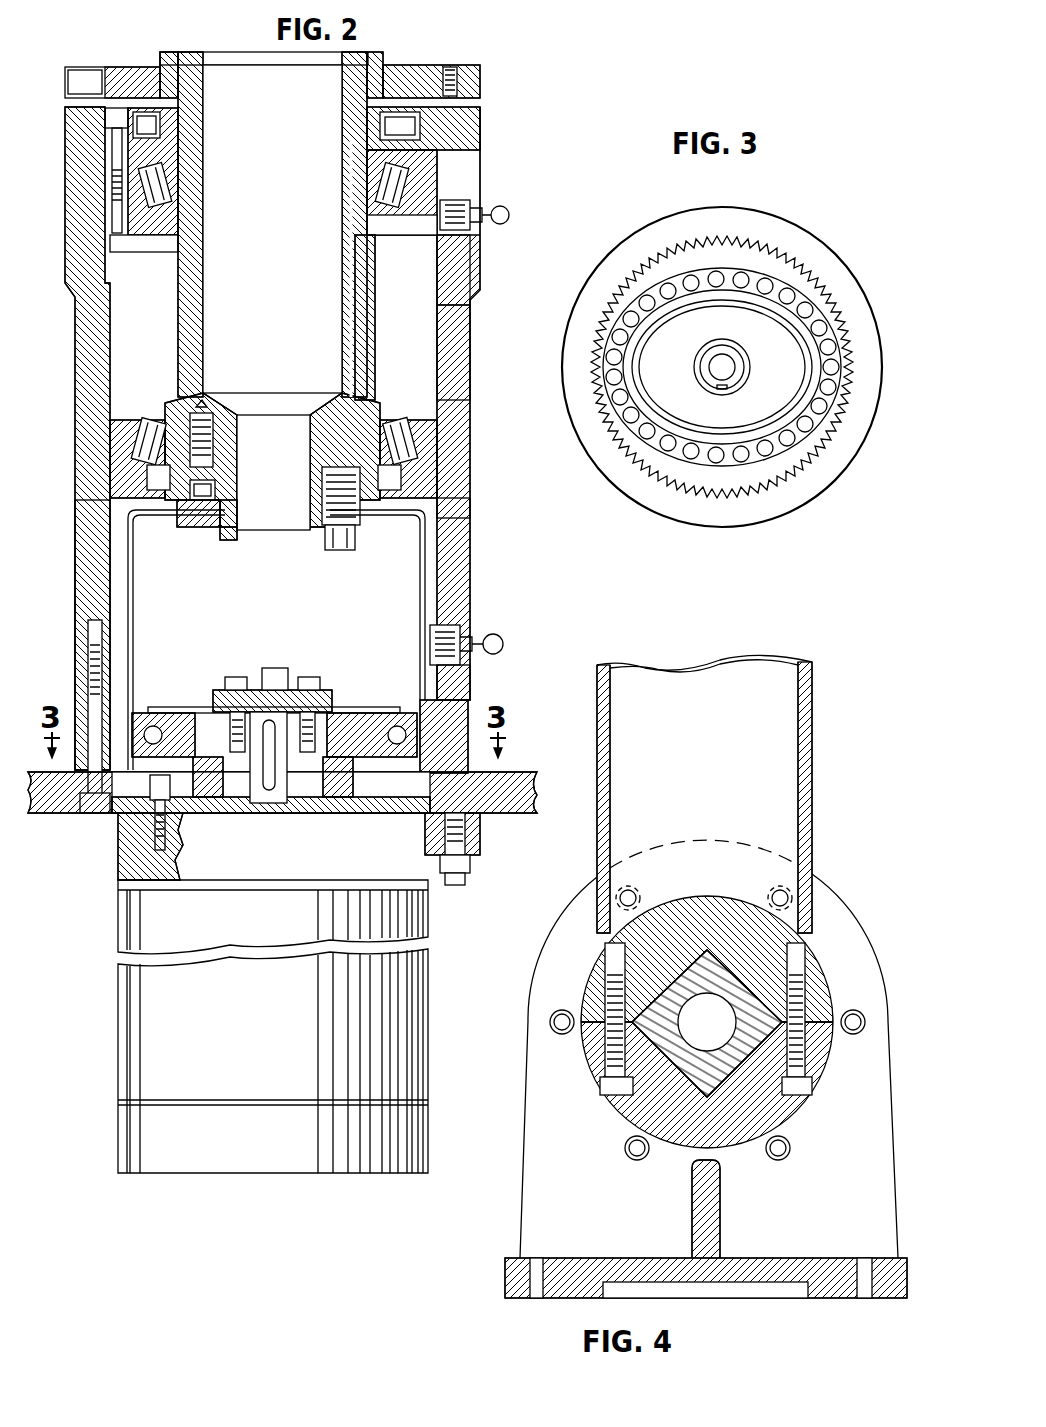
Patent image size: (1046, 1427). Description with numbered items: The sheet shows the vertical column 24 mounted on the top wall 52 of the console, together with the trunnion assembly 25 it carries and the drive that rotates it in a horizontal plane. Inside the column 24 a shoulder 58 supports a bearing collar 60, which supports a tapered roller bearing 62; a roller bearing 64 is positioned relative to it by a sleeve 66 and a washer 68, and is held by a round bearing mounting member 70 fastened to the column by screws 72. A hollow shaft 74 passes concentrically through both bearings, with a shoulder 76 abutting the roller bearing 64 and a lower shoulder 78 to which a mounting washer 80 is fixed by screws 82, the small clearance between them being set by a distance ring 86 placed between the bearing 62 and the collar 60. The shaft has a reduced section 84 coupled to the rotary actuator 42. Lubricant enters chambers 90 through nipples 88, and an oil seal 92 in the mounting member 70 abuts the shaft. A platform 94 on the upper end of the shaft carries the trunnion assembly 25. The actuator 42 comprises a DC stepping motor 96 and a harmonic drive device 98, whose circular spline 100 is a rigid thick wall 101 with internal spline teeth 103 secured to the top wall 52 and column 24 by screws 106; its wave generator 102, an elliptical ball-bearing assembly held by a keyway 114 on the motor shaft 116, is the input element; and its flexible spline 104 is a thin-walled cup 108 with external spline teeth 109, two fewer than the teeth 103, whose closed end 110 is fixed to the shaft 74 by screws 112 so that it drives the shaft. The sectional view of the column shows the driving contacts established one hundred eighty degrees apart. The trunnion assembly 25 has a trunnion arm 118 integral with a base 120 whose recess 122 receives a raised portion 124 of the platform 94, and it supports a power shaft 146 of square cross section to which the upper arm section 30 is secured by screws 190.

In FIG. 2, the vertical column 24 is at (460, 345).
In FIG. 4, the trunnion assembly 25 is at (845, 835).
In FIG. 4, the upper arm section 30 is at (704, 794).
In FIG. 2, the rotary actuator 42 is at (440, 930).
In FIG. 2, the top wall 52 is at (505, 780).
In FIG. 2, the shoulder 58 is at (455, 514).
In FIG. 2, the bearing collar 60 is at (435, 480).
In FIG. 2, the tapered roller bearing 62 is at (415, 442).
In FIG. 2, the roller bearing 64 is at (400, 190).
In FIG. 2, the sleeve 66 is at (448, 303).
In FIG. 2, the washer 68 is at (465, 268).
In FIG. 2, the bearing mounting member 70 is at (455, 135).
In FIG. 2, the screws 72 is at (105, 150).
In FIG. 2, the shaft 74 is at (345, 262).
In FIG. 2, the shoulder 76 is at (348, 150).
In FIG. 2, the shoulder 78 is at (245, 420).
In FIG. 2, the mounting washer 80 is at (185, 495).
In FIG. 2, the screws 82 is at (205, 490).
In FIG. 2, the reduced section 84 is at (240, 535).
In FIG. 2, the distance ring 86 is at (420, 466).
In FIG. 2, the nipples 88 is at (510, 212).
In FIG. 2, the chambers 90 is at (496, 605).
In FIG. 2, the oil seal 92 is at (150, 110).
In FIG. 2, the platform 94 is at (430, 68).
In FIG. 2, the DC stepping motor 96 is at (273, 1026).
In FIG. 2, the harmonic drive device 98 is at (430, 600).
In FIG. 2, the circular spline 100 is at (460, 700).
In FIG. 3, the circular spline 100 is at (816, 238).
In FIG. 3, the thick wall 101 is at (838, 300).
In FIG. 2, the wave generator 102 is at (145, 705).
In FIG. 3, the wave generator 102 is at (722, 367).
In FIG. 3, the spline teeth 103 is at (812, 290).
In FIG. 2, the flexible spline 104 is at (135, 612).
In FIG. 3, the flexible spline 104 is at (774, 265).
In FIG. 2, the screws 106 is at (95, 730).
In FIG. 2, the cup 108 is at (428, 565).
In FIG. 3, the cup 108 is at (788, 480).
In FIG. 3, the spline teeth 109 is at (702, 495).
In FIG. 2, the closed end 110 is at (128, 540).
In FIG. 2, the screws 112 is at (340, 548).
In FIG. 2, the keyway 114 is at (269, 792).
In FIG. 2, the shaft 116 is at (285, 800).
In FIG. 4, the trunnion arm 118 is at (850, 960).
In FIG. 4, the base 120 is at (898, 1275).
In FIG. 4, the recess 122 is at (760, 1290).
In FIG. 2, the raised portion 124 is at (170, 58).
In FIG. 4, the power shaft 146 is at (685, 1100).
In FIG. 4, the screws 190 is at (610, 1100).